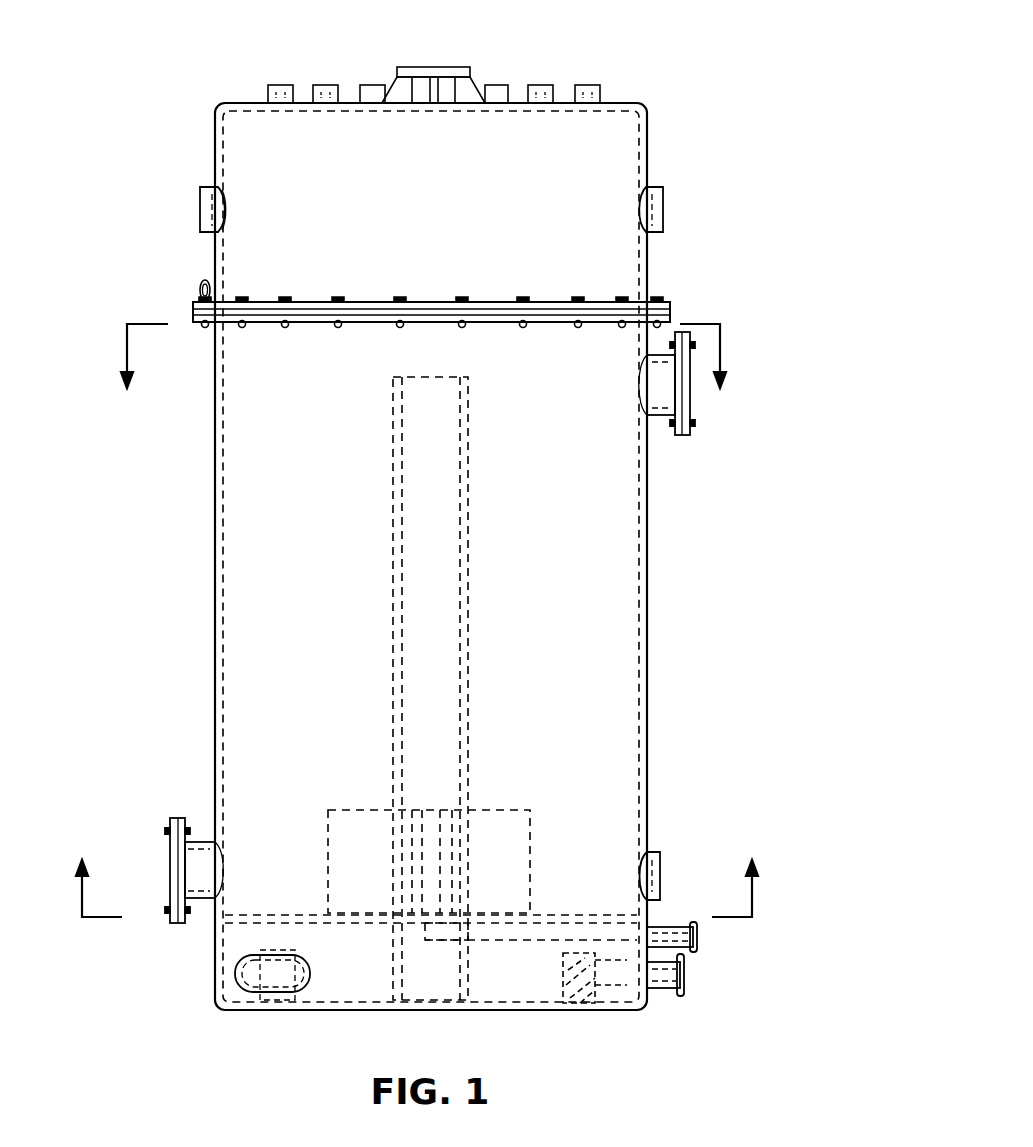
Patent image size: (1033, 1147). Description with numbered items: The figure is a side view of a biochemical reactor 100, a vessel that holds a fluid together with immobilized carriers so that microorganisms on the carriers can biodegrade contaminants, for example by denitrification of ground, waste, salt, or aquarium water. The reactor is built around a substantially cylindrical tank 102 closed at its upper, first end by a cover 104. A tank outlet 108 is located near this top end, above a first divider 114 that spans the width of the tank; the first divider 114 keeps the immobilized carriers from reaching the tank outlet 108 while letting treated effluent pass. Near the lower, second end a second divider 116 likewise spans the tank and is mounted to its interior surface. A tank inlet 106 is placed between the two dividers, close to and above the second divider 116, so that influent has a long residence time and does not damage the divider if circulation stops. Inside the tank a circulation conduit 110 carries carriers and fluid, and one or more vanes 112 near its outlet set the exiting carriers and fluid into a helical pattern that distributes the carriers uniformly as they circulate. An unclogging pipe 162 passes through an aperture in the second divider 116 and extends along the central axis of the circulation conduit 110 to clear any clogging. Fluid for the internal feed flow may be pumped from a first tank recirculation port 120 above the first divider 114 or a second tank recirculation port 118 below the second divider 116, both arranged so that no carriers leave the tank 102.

The biochemical reactor 100 is at (673, 66).
The tank 102 is at (238, 514).
The cover 104 is at (244, 141).
The tank inlet 106 is at (662, 872).
The tank outlet 108 is at (200, 213).
The circulation conduit 110 is at (468, 668).
The vanes 112 is at (520, 835).
The first divider 114 is at (596, 310).
The second divider 116 is at (290, 922).
The second tank recirculation port 118 is at (690, 980).
The first tank recirculation port 120 is at (664, 210).
The unclogging pipe 162 is at (697, 940).